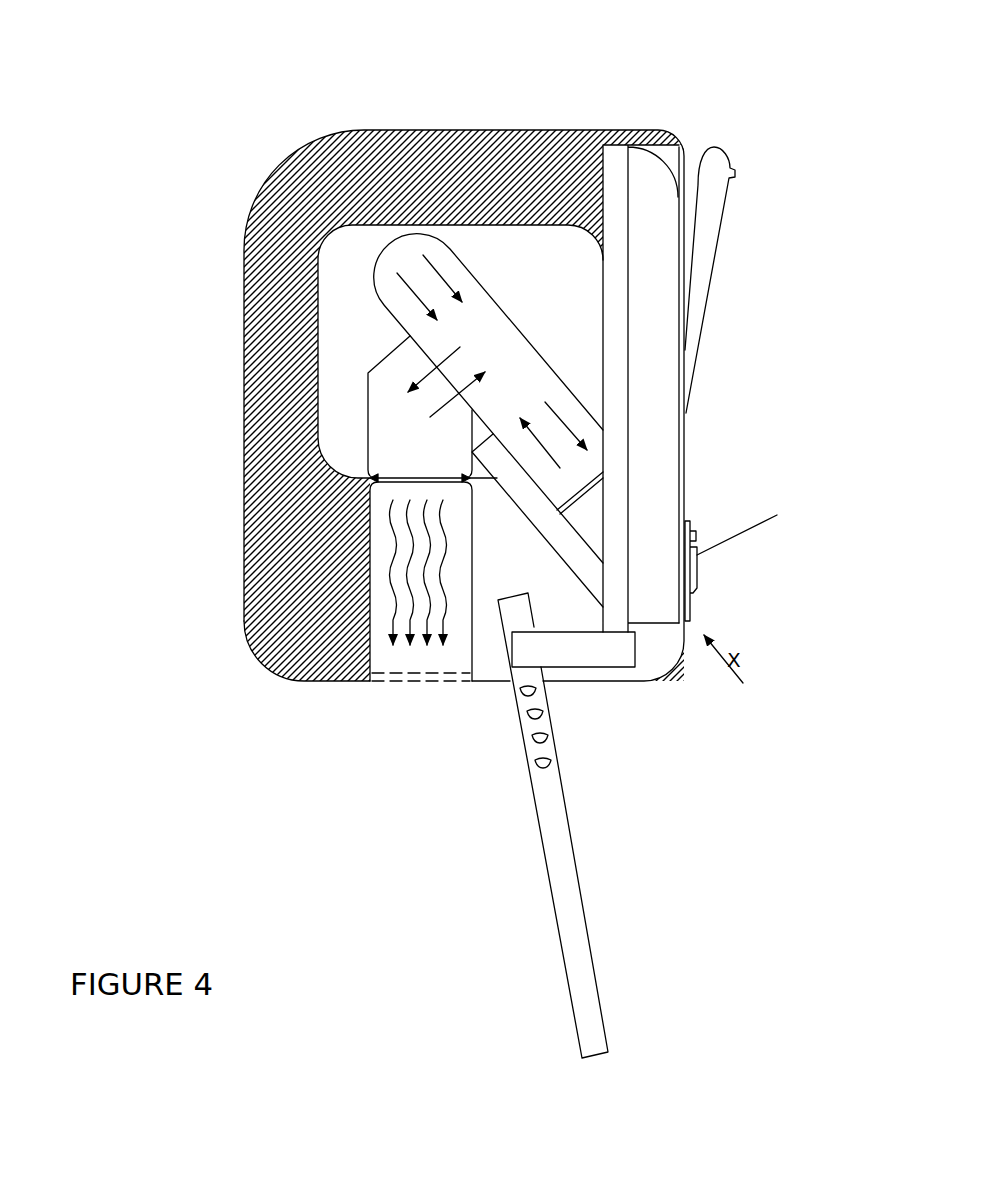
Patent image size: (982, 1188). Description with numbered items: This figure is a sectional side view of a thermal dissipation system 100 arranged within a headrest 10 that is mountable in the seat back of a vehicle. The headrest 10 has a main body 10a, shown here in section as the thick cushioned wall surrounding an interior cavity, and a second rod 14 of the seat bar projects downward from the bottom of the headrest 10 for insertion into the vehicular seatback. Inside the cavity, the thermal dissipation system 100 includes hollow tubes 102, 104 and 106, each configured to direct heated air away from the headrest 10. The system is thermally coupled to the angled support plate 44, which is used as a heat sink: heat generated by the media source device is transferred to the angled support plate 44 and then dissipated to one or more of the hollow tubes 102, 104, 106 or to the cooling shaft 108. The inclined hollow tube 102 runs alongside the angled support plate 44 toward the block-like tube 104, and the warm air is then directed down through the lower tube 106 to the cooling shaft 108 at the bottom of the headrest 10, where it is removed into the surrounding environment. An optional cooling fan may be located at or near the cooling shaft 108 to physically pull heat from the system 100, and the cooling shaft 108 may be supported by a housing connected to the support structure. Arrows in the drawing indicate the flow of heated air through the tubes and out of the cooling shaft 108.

The headrest 10 is at (173, 134).
The main body 10a is at (468, 150).
The thermal dissipation system 100 is at (275, 237).
The hollow tube 102 is at (402, 258).
The hollow tube 104 is at (385, 443).
The hollow tube 106 is at (378, 617).
The cooling shaft 108 is at (420, 680).
The angled support plate 44 is at (572, 543).
The second rod 14 is at (560, 883).